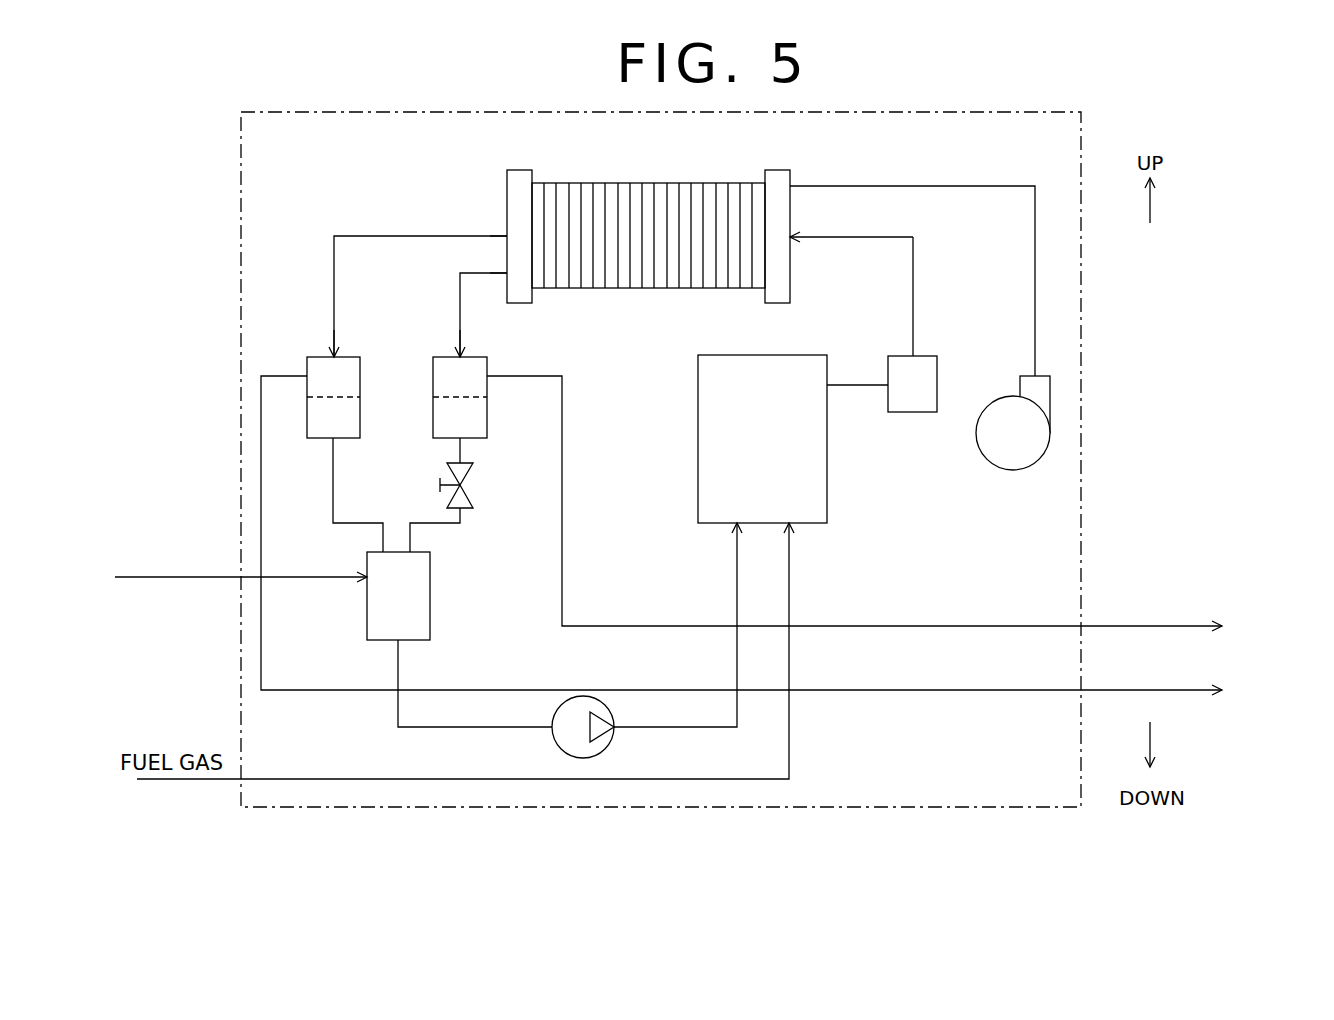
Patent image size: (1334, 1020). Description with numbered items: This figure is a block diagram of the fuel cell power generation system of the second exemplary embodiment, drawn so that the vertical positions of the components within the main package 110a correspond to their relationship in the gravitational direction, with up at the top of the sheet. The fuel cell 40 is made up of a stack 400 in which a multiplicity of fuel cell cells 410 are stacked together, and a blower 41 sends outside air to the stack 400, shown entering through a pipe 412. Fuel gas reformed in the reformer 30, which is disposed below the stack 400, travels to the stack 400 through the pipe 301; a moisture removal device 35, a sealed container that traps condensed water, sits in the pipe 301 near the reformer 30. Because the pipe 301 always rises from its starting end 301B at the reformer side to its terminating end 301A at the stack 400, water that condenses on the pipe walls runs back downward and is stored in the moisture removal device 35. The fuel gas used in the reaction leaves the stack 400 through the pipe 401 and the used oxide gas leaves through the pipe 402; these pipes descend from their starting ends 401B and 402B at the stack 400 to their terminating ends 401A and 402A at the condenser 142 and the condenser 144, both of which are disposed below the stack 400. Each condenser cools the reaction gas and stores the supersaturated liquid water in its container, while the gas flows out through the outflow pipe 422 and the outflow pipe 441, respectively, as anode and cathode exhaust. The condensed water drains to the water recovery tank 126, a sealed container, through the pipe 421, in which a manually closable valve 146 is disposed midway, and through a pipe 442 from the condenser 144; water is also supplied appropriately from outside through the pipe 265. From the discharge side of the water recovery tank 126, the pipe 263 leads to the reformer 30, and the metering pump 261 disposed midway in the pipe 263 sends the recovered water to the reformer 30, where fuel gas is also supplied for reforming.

The main package 110a is at (1083, 360).
The fuel cell 40 is at (682, 211).
The stack 400 is at (667, 183).
The fuel cell cells 410 is at (560, 186).
The air supply pipe 412 is at (948, 186).
The blower 41 is at (1013, 470).
The pipe 301 is at (900, 288).
The terminating end 301A is at (797, 229).
The starting end 301B is at (840, 375).
The moisture removal device 35 is at (912, 412).
The reformer 30 is at (712, 523).
The condenser 142 is at (478, 368).
The condenser 144 is at (307, 368).
The manually closable valve 146 is at (470, 478).
The pipe 401 is at (460, 312).
The terminating end 401A is at (470, 352).
The starting end 401B is at (500, 282).
The pipe 402 is at (334, 255).
The terminating end 402A is at (326, 355).
The starting end 402B is at (498, 229).
The pipe 421 is at (463, 518).
The outflow pipe 422 is at (562, 513).
The outflow pipe 441 is at (296, 690).
The condensed water pipe 442 is at (331, 492).
The water recovery tank 126 is at (367, 598).
The pipe 263 is at (455, 727).
The metering pump 261 is at (612, 740).
The pipe 265 is at (218, 577).